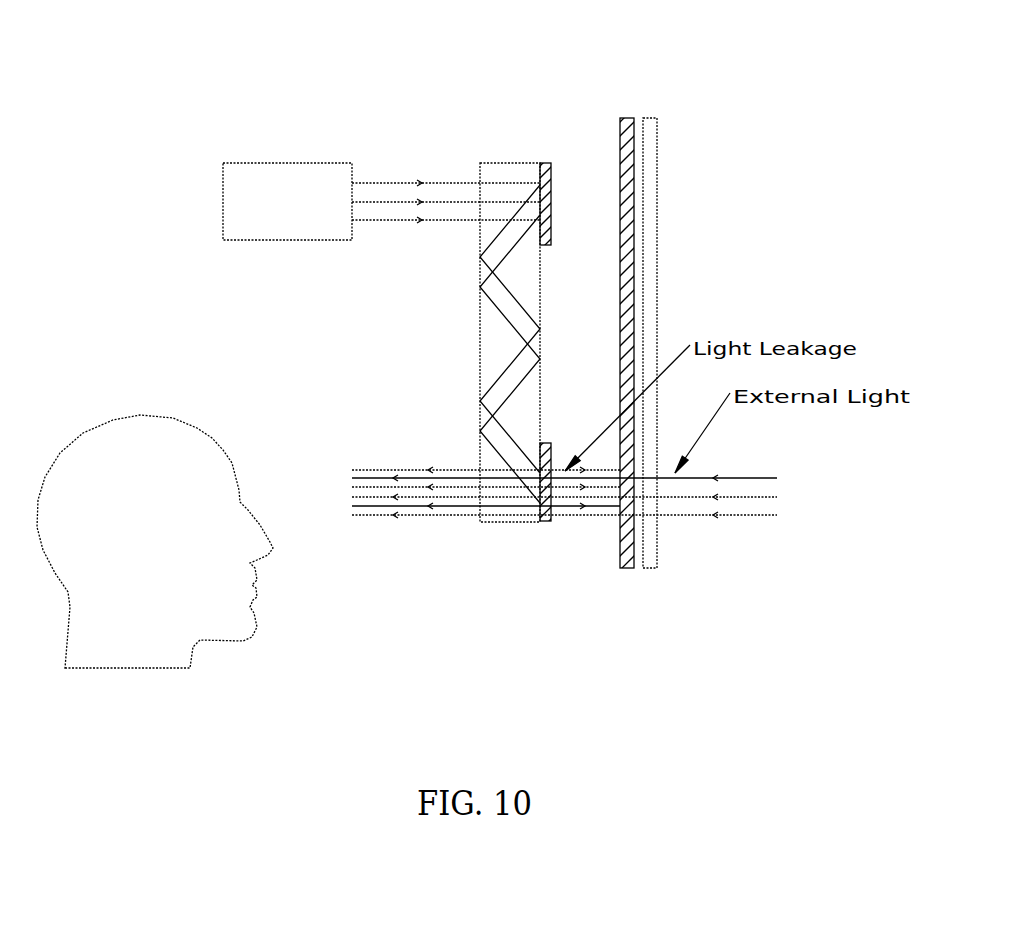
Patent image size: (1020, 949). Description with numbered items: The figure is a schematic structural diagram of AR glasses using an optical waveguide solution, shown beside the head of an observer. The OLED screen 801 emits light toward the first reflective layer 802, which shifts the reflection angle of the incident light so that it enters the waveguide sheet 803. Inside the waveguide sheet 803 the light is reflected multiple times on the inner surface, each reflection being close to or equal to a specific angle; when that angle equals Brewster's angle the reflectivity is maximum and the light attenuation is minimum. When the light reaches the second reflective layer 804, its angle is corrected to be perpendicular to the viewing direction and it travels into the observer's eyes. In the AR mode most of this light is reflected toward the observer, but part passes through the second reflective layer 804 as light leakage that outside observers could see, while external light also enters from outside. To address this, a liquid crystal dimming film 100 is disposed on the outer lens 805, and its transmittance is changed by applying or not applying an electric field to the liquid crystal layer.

The OLED screen 801 is at (381, 201).
The first reflective layer 802 is at (545, 163).
The waveguide sheet 803 is at (510, 163).
The second reflective layer 804 is at (548, 524).
The liquid crystal dimming film 100 is at (620, 568).
The outer lens 805 is at (648, 568).